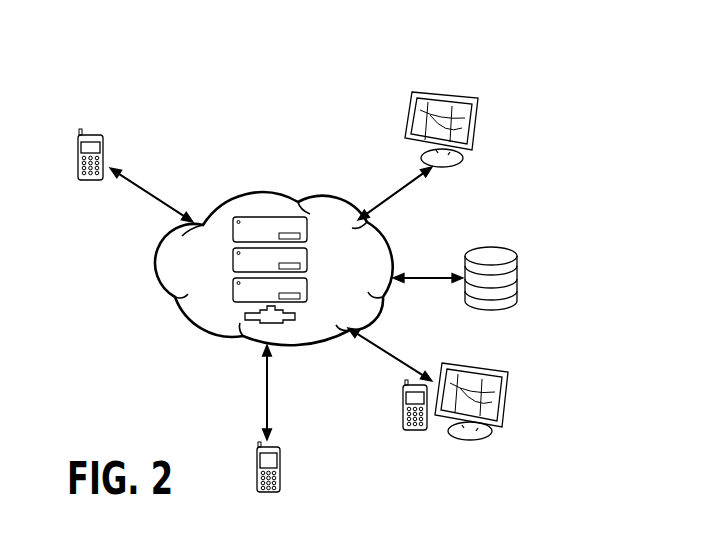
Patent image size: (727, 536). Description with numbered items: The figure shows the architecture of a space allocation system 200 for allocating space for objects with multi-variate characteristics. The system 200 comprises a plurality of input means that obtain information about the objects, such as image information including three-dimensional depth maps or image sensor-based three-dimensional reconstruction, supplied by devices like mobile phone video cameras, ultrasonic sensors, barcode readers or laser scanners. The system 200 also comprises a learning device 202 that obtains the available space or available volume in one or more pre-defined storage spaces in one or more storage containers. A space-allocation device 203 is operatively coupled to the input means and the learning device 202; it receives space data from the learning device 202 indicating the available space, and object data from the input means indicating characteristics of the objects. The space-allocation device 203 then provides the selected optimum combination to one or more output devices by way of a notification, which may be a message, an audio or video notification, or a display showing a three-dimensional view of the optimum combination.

The system 200 is at (586, 143).
The learning device 202 is at (510, 248).
The space-allocation device 203 is at (273, 193).